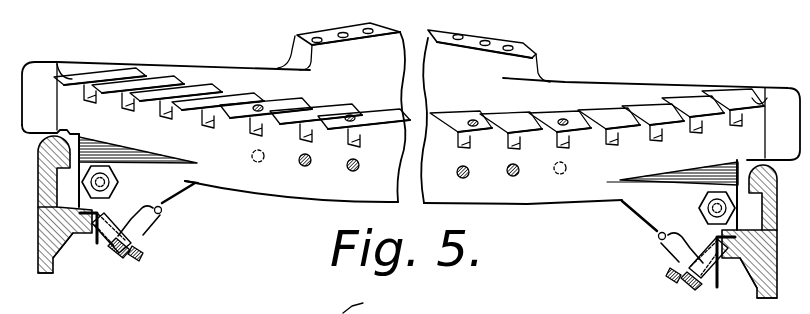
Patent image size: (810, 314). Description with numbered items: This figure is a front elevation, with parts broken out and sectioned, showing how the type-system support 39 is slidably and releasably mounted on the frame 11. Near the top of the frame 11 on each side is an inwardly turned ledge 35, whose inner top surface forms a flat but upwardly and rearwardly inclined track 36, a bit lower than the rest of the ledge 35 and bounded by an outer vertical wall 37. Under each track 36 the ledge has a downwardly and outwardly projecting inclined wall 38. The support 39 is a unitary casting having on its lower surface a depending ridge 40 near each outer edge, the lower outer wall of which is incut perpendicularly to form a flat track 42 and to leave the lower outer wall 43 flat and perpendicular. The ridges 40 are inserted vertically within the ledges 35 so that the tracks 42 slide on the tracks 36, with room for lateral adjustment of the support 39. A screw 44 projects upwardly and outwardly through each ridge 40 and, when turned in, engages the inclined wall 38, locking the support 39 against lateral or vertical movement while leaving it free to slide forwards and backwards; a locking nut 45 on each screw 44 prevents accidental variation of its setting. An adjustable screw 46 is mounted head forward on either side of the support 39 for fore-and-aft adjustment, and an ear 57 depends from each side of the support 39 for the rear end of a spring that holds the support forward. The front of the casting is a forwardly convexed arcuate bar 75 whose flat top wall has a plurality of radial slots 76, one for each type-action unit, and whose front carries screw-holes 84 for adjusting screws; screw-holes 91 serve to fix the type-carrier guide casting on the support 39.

The frame 11 is at (38, 183).
The ledge 35 is at (60, 262).
The track 36 is at (62, 242).
The outer vertical wall 37 is at (38, 213).
The inclined wall 38 is at (96, 245).
The support 39 is at (627, 90).
The depending ridge 40 is at (161, 214).
The track 42 is at (78, 194).
The lower outer wall 43 is at (98, 213).
The screw 44 is at (143, 257).
The locking nut 45 is at (118, 262).
The adjustable screw 46 is at (111, 171).
The ear 57 is at (166, 204).
The arcuate bar 75 is at (527, 204).
The radial slot 76 is at (653, 143).
The screw-hole 84 is at (300, 166).
The screw-hole 91 is at (310, 33).